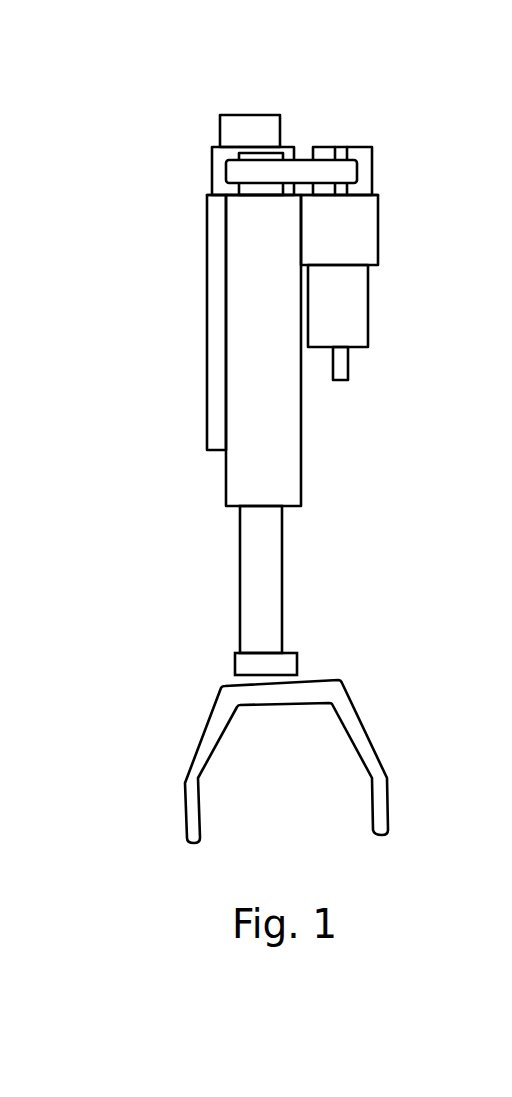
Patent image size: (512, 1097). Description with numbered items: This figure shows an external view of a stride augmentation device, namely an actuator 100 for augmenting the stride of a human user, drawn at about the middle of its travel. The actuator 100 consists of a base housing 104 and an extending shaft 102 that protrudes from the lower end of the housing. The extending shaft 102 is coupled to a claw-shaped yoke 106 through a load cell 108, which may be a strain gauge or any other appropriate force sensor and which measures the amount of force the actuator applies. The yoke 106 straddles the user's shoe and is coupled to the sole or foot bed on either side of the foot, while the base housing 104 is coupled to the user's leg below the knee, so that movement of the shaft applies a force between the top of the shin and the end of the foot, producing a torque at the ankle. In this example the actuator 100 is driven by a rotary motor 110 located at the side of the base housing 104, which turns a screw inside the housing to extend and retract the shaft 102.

The actuator 100 is at (322, 454).
The extending shaft 102 is at (267, 565).
The base housing 104 is at (272, 330).
The claw-shaped yoke 106 is at (378, 755).
The load cell 108 is at (298, 671).
The rotary motor 110 is at (357, 290).